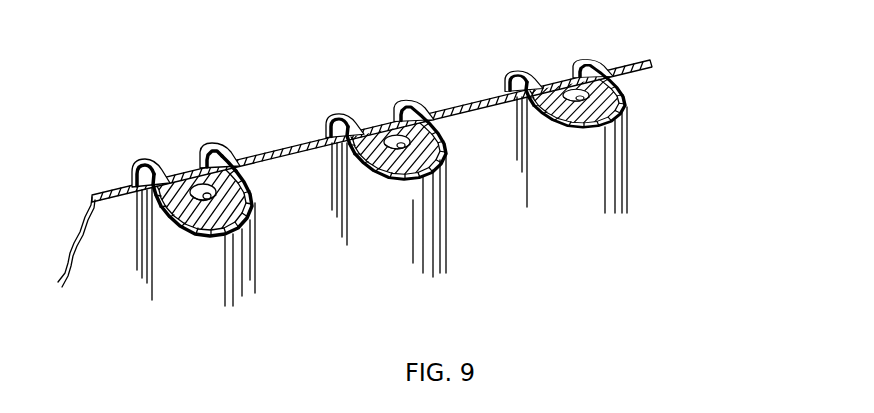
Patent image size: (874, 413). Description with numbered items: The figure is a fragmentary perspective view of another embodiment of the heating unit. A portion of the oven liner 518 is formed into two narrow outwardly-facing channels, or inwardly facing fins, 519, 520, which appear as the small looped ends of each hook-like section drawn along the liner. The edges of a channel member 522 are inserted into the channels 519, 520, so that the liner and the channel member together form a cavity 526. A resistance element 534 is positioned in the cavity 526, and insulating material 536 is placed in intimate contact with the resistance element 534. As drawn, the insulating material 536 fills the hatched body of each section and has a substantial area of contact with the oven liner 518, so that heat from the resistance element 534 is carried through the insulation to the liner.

The oven liner 518 is at (110, 245).
The channel 519 is at (143, 161).
The channel 520 is at (216, 145).
The channel member 522 is at (238, 273).
The cavity 526 is at (193, 185).
The resistance element 534 is at (230, 168).
The insulating material 536 is at (237, 205).